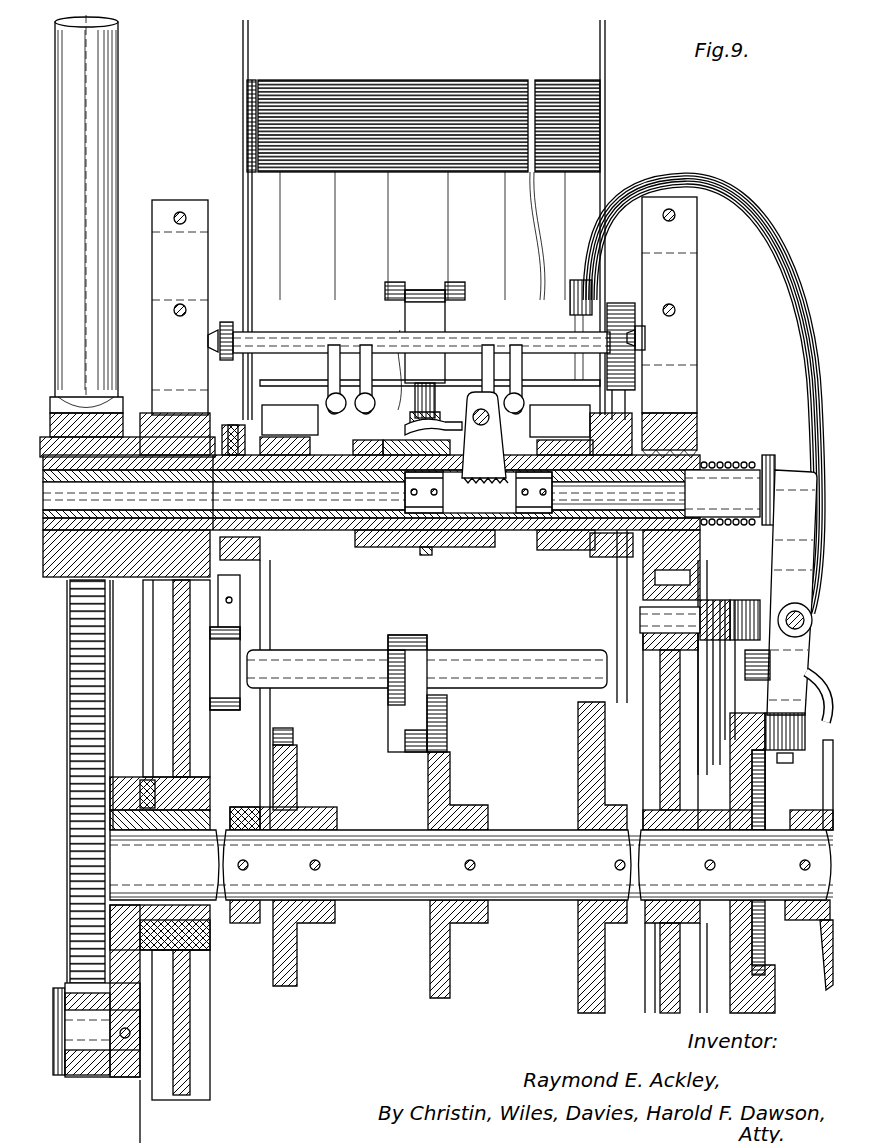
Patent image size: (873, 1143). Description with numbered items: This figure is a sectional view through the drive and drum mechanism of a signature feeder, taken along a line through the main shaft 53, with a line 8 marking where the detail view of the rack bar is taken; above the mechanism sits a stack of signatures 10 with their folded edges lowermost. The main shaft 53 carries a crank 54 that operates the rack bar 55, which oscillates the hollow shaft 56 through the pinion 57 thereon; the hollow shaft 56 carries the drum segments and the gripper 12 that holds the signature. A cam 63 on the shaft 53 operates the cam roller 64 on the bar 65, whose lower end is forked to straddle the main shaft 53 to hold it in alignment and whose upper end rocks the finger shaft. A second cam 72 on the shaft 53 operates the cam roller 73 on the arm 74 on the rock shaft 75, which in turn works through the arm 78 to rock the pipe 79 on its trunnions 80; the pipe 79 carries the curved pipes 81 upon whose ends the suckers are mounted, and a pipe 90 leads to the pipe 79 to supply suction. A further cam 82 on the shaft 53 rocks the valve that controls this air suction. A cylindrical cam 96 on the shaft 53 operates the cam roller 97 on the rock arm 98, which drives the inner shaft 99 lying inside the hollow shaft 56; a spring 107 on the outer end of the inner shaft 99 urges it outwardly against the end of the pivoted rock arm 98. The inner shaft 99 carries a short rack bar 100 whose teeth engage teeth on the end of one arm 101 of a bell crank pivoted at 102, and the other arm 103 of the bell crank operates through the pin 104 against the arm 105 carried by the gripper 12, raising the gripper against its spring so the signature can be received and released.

The section line for Fig. 8 is at (98, 49).
The stack of signatures 10 is at (425, 105).
The gripper 12 is at (418, 312).
The main shaft 53 is at (395, 882).
The crank 54 is at (130, 1062).
The rack bar 55 is at (97, 760).
The hollow shaft 56 is at (225, 455).
The pinion 57 is at (118, 413).
The cam 63 is at (298, 781).
The cam roller 64 is at (295, 733).
The bar 65 is at (272, 627).
The cam 72 is at (440, 773).
The cam roller 73 is at (442, 712).
The arm 74 is at (417, 702).
The rock shaft 75 is at (478, 655).
The arm 78 is at (618, 363).
The pipe 79 is at (300, 345).
The trunnions 80 is at (215, 330).
The curved pipes 81 is at (332, 378).
The cam 82 is at (585, 742).
The pipe 90 is at (808, 373).
The cylindrical cam 96 is at (767, 948).
The cam roller 97 is at (795, 752).
The rock arm 98 is at (787, 540).
The inner shaft 99 is at (592, 510).
The short rack bar 100 is at (470, 490).
The arm of bell crank 101 is at (478, 440).
The pivot 102 is at (490, 398).
The arm of bell crank 103 is at (440, 425).
The pin 104 is at (400, 405).
The arm 105 is at (421, 372).
The spring 107 is at (740, 456).